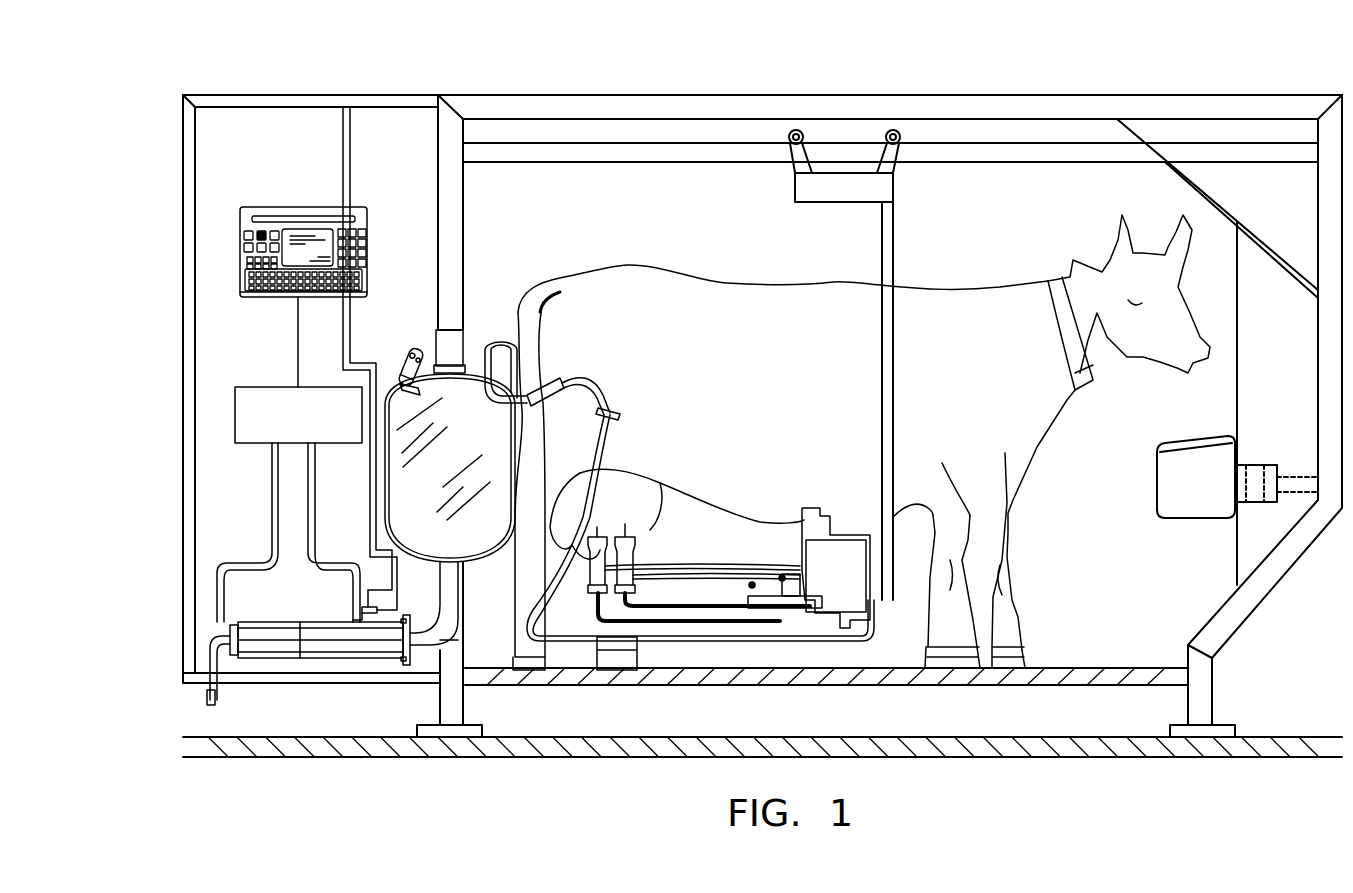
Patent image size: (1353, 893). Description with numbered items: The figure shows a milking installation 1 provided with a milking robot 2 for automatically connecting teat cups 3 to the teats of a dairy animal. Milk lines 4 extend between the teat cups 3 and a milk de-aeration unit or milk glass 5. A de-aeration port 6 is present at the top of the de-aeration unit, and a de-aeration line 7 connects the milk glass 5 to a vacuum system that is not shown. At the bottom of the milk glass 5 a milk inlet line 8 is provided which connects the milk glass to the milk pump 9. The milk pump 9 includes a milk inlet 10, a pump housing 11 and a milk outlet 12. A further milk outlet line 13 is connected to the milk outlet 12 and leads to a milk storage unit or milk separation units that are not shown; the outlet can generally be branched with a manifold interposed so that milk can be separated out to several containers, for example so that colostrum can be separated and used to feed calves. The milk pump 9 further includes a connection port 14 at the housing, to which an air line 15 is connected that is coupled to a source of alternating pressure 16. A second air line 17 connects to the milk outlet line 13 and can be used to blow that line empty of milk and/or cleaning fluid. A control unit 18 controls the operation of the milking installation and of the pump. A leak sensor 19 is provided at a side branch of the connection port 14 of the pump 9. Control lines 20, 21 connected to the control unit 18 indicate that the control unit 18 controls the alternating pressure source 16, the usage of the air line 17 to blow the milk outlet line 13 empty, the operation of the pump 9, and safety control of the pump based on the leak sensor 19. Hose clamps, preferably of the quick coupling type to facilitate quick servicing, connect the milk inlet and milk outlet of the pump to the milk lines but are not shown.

The milking installation 1 is at (1008, 82).
The milking robot 2 is at (1113, 577).
The teat cups 3 is at (598, 556).
The milk lines 4 is at (491, 347).
The milk de-aeration unit or milk glass 5 is at (467, 527).
The de-aeration port 6 is at (404, 387).
The de-aeration line 7 is at (405, 340).
The milk inlet line 8 is at (435, 637).
The milk pump 9 is at (272, 648).
The milk inlet 10 is at (413, 640).
The pump housing 11 is at (312, 648).
The milk outlet 12 is at (215, 652).
The milk outlet line 13 is at (208, 695).
The connection port 14 is at (353, 620).
The air line 15 is at (333, 565).
The source of alternating pressure 16 is at (262, 417).
The second air line 17 is at (275, 500).
The control unit 18 is at (275, 210).
The leak sensor 19 is at (378, 613).
The control line 20 is at (298, 338).
The control line 21 is at (370, 527).